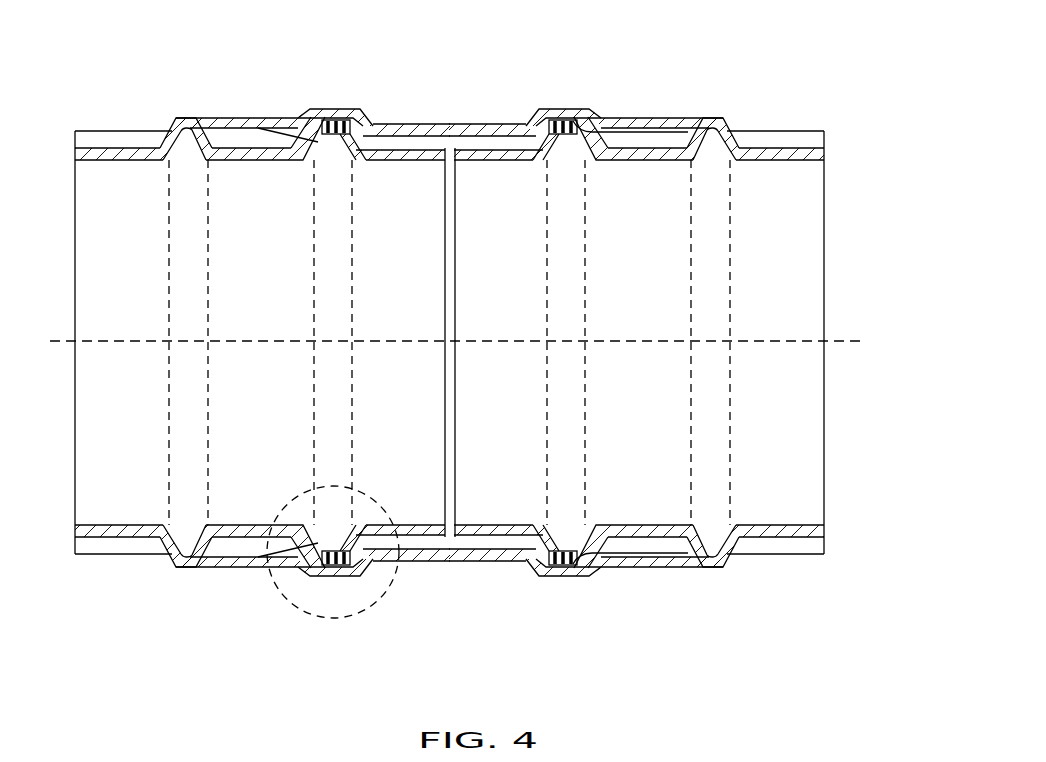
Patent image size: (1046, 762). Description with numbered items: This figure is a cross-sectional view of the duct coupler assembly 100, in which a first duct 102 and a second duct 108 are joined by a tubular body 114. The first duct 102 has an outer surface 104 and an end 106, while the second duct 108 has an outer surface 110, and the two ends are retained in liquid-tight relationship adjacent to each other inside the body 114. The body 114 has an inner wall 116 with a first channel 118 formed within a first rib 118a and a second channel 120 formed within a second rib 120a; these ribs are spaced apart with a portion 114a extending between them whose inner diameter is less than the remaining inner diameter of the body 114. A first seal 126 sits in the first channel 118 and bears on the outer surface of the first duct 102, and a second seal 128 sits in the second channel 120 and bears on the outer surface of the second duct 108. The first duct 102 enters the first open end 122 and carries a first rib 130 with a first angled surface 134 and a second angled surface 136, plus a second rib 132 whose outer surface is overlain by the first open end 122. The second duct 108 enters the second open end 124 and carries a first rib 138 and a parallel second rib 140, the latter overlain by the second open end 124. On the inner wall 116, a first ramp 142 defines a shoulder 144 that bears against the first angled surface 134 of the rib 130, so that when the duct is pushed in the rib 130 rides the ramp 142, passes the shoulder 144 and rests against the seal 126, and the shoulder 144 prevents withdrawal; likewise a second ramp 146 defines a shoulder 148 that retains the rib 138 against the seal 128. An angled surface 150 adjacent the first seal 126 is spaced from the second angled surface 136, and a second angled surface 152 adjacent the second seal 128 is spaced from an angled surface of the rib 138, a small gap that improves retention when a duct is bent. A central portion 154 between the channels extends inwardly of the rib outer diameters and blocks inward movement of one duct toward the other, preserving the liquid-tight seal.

The duct coupler assembly 100 is at (727, 44).
The first duct 102 is at (815, 136).
The outer surface 104 is at (786, 128).
The end 106 is at (457, 238).
The second duct 108 is at (83, 141).
The outer surface 110 is at (125, 131).
The body 114 is at (428, 124).
The portion 114a is at (468, 124).
The inner wall 116 is at (730, 556).
The first channel 118 is at (560, 110).
The first rib 118a is at (566, 109).
The second channel 120 is at (340, 109).
The second rib 120a is at (322, 110).
The first open end 122 is at (740, 128).
The second open end 124 is at (168, 118).
The first seal 126 is at (592, 112).
The second seal 128 is at (368, 114).
The first rib 130 is at (526, 110).
The second rib 132 is at (702, 118).
The first angled surface 134 is at (597, 572).
The second angled surface 136 is at (549, 527).
The first rib 138 is at (306, 122).
The second rib 140 is at (190, 136).
The first ramp 142 is at (640, 557).
The shoulder 144 is at (589, 568).
The second ramp 146 is at (276, 566).
The shoulder 148 is at (311, 570).
The angled surface 150 is at (507, 574).
The second angled surface 152 is at (371, 578).
The central portion 154 is at (467, 572).